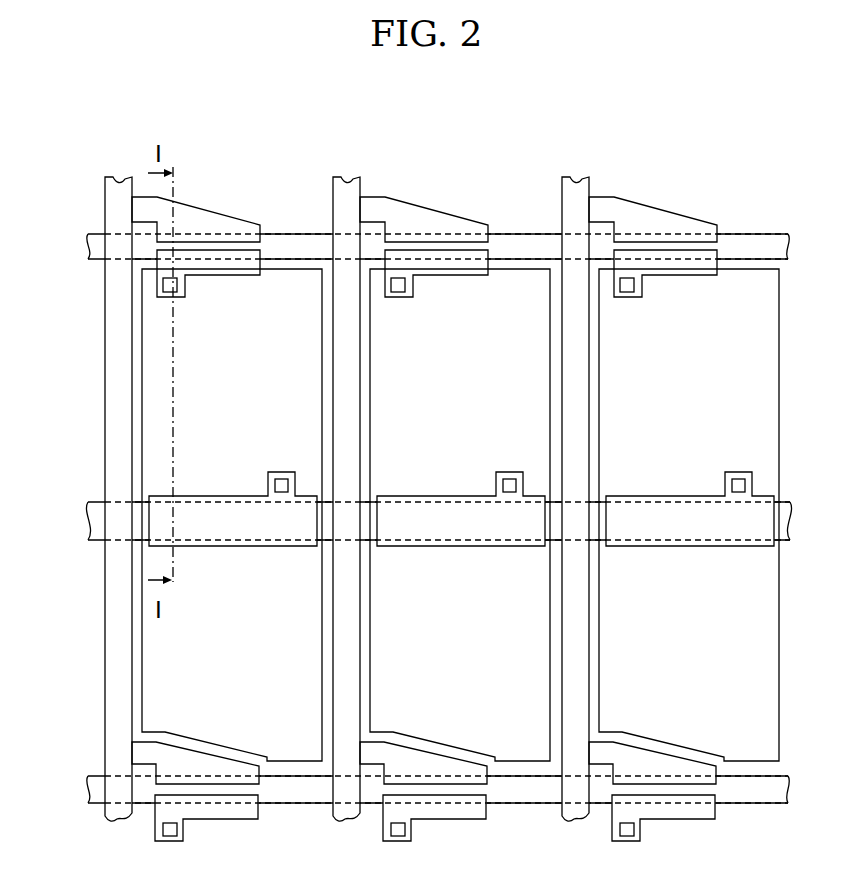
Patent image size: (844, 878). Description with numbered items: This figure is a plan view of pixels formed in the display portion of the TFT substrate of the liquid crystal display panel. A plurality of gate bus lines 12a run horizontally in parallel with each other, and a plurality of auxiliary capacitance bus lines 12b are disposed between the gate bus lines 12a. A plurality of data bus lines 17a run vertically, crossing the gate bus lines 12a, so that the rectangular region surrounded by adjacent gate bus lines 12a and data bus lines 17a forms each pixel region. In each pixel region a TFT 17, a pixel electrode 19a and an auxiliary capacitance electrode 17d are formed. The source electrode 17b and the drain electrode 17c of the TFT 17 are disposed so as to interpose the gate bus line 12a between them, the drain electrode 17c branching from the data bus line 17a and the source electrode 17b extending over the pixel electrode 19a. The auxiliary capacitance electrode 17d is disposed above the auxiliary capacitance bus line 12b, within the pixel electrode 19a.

The gate bus line 12a is at (93, 252).
The auxiliary capacitance bus line 12b is at (90, 522).
The TFT 17 is at (207, 296).
The data bus line 17a is at (118, 183).
The source electrode 17b is at (243, 278).
The drain electrode 17c is at (203, 216).
The auxiliary capacitance electrode 17d is at (257, 548).
The pixel electrode 19a is at (300, 284).